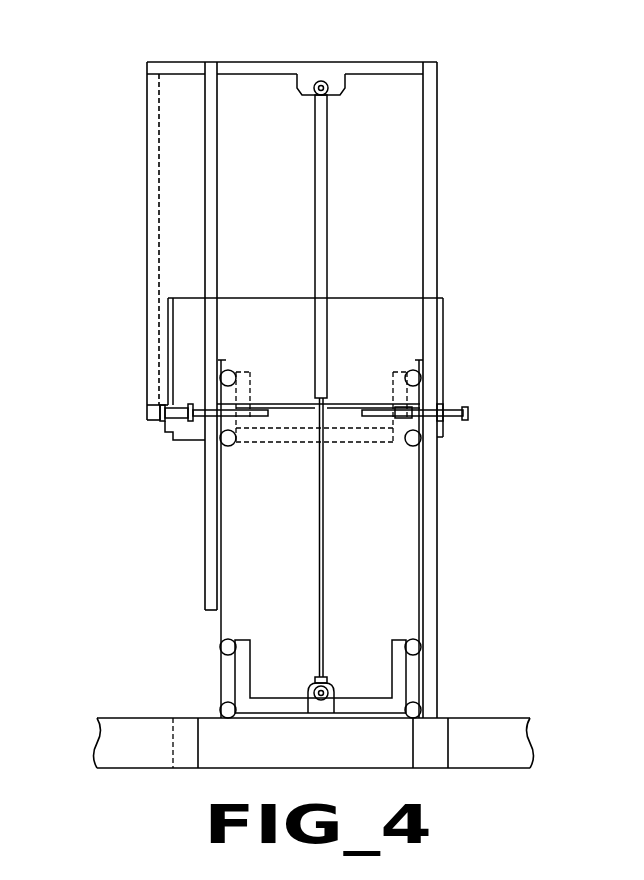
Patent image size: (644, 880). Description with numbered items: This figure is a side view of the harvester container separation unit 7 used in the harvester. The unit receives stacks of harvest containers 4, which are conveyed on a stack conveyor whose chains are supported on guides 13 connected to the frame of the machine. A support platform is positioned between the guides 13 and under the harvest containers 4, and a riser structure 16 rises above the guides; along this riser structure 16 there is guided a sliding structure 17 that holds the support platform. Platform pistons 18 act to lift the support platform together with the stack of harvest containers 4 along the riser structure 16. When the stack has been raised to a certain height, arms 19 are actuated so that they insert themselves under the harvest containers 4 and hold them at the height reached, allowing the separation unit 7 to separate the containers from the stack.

The harvester container separation unit 7 is at (108, 138).
The riser structure 16 is at (147, 223).
The platform pistons 18 is at (328, 192).
The harvest containers 4 is at (336, 300).
The arms 19 is at (170, 407).
The sliding structure 17 is at (228, 677).
The guides 13 is at (478, 717).